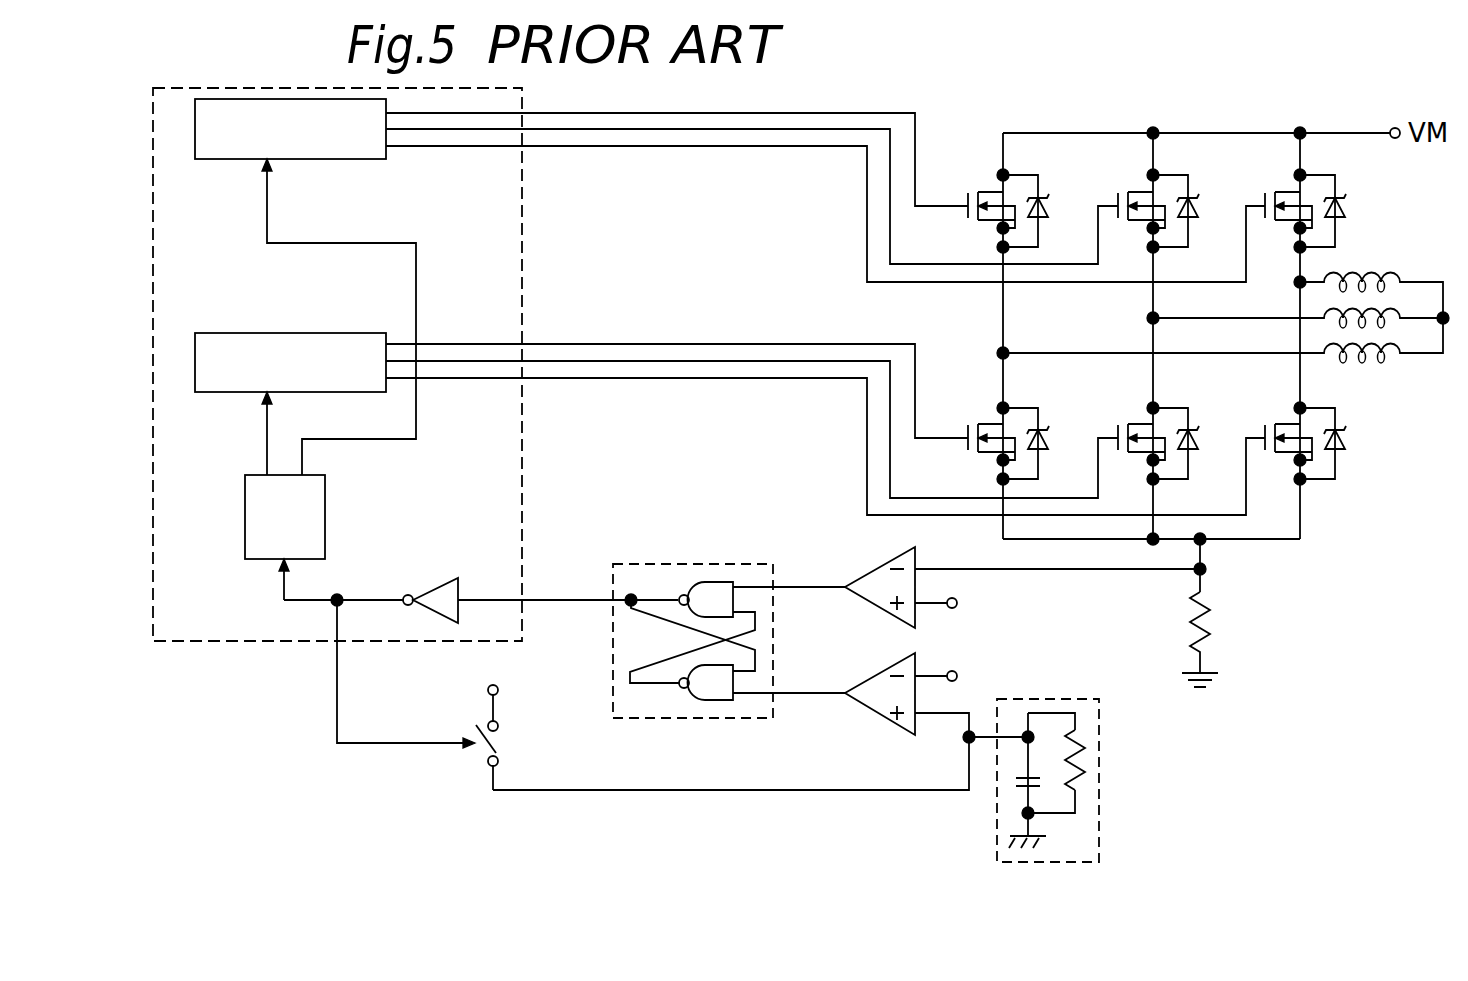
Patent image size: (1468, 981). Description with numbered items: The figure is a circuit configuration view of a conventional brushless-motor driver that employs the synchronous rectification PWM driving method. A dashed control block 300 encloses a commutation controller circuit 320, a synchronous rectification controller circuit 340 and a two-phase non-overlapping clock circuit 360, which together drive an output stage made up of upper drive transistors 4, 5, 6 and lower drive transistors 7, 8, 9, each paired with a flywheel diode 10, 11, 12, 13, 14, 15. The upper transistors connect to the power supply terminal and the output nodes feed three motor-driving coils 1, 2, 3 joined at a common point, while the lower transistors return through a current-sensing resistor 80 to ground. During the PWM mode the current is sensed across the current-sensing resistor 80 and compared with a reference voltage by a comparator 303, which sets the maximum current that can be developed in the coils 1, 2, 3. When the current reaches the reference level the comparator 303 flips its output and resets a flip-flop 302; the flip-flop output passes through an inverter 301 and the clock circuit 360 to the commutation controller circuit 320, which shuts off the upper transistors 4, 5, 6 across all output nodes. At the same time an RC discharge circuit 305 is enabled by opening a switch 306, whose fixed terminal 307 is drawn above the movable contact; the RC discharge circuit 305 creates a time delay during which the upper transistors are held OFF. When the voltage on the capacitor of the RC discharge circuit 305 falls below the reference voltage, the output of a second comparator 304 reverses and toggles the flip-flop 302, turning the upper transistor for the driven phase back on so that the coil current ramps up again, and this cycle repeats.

The motor drive control circuit 300 is at (228, 88).
The commutation controller circuit 320 is at (224, 160).
The synchronous rectification controller circuit 340 is at (224, 393).
The 2-phase non-overlapping clock circuit 360 is at (245, 522).
The inverter 301 is at (434, 590).
The flip-flop 302 is at (716, 566).
The comparator 303 is at (878, 569).
The comparator 304 is at (878, 716).
The RC discharge circuit 305 is at (1100, 800).
The switch 306 is at (500, 744).
The switch terminal 307 is at (488, 707).
The current-sensing resistor 80 is at (1206, 626).
The motor-driving coil 1 is at (1393, 273).
The motor-driving coil 2 is at (1393, 309).
The motor-driving coil 3 is at (1393, 344).
The upper drive transistor 4 is at (1293, 191).
The upper drive transistor 5 is at (1146, 191).
The upper drive transistor 6 is at (996, 191).
The lower drive transistor 7 is at (1293, 423).
The lower drive transistor 8 is at (1146, 423).
The lower drive transistor 9 is at (996, 423).
The flywheel diode 10 is at (1339, 197).
The flywheel diode 11 is at (1192, 197).
The flywheel diode 12 is at (1042, 197).
The flywheel diode 13 is at (1339, 429).
The flywheel diode 14 is at (1192, 429).
The flywheel diode 15 is at (1042, 429).